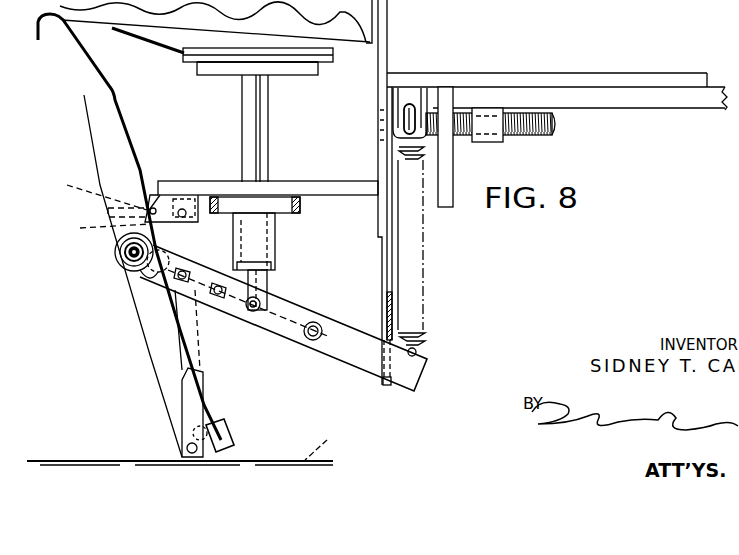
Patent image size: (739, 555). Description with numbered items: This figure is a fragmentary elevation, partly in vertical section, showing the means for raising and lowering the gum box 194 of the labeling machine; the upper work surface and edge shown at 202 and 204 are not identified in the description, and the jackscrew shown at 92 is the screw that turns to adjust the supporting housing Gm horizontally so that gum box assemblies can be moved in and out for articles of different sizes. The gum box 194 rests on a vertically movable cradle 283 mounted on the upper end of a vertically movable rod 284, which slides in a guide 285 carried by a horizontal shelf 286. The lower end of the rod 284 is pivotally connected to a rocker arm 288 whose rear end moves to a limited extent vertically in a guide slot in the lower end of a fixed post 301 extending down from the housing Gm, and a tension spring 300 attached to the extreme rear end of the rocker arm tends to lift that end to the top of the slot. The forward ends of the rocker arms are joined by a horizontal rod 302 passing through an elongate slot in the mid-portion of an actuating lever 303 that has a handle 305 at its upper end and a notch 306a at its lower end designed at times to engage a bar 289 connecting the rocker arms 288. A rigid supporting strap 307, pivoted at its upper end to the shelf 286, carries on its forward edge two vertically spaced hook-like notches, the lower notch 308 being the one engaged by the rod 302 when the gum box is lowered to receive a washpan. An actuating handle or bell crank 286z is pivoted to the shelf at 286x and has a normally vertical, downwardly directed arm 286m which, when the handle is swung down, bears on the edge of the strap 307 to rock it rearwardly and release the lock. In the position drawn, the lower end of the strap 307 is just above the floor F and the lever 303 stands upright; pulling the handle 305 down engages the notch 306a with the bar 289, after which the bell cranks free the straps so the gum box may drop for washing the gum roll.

The work support / cloth bed 202 is at (296, 21).
The bed edge 204 is at (285, 26).
The handle 305 is at (62, 47).
The actuating lever 303 is at (153, 355).
The gum box 194 is at (113, 18).
The cradle 283 is at (223, 58).
The vertically movable rod 284 is at (270, 100).
The horizontal shelf 286 is at (330, 172).
The pivot 286x is at (168, 182).
The actuating handle or bell crank 286z is at (87, 185).
The downwardly directed arm 286m is at (86, 223).
The horizontal rod 302 is at (117, 268).
The rocker arm 288 is at (350, 350).
The guide 285 is at (277, 238).
The bar 289 is at (312, 323).
The rigid supporting strap 307 is at (192, 398).
The lower notch 308 is at (183, 370).
The notch 306a is at (203, 430).
The floor F is at (329, 442).
The supporting housing Gm is at (377, 63).
The fixed post 301 is at (387, 308).
The tension spring 300 is at (412, 247).
The screw 92 is at (557, 140).